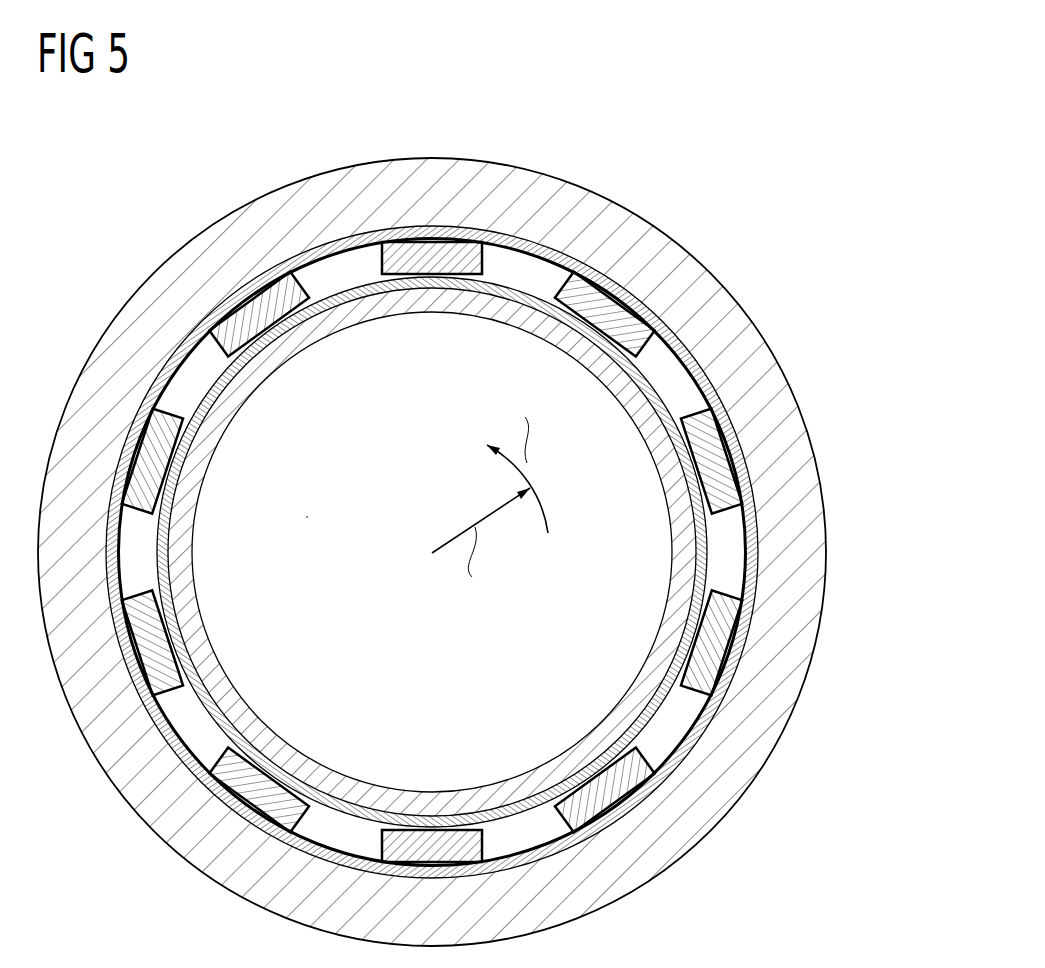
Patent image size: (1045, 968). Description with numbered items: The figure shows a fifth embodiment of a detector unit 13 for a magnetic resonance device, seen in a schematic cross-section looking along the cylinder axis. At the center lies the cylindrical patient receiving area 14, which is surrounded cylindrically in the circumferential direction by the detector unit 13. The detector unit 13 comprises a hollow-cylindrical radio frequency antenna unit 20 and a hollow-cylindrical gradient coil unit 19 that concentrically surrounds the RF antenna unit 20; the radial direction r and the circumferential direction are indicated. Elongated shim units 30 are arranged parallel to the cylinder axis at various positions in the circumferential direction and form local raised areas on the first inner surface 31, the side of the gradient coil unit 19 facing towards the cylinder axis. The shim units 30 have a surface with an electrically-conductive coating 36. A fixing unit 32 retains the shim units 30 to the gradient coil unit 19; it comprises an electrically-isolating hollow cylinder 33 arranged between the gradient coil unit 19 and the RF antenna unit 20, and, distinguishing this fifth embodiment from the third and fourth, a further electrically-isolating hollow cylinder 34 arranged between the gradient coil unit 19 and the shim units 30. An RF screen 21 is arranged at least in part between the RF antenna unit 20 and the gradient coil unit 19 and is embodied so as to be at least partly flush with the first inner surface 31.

The detector unit 13 is at (685, 129).
The patient receiving area 14 is at (323, 478).
The gradient coil unit 19 is at (433, 183).
The radio frequency antenna unit 20 is at (648, 423).
The RF screen 21 is at (535, 247).
The shim unit 30 is at (712, 462).
The first inner surface 31 is at (622, 281).
The fixing unit 32 is at (521, 552).
The electrically-isolating hollow cylinder 33 is at (643, 380).
The further electrically-isolating hollow cylinder 34 is at (755, 558).
The electrically-conductive coating 36 is at (725, 513).